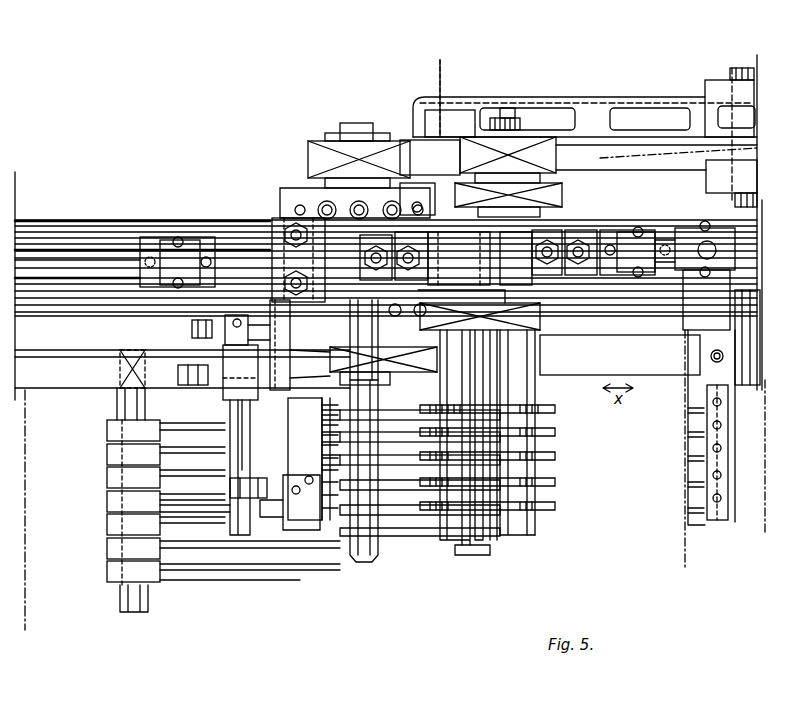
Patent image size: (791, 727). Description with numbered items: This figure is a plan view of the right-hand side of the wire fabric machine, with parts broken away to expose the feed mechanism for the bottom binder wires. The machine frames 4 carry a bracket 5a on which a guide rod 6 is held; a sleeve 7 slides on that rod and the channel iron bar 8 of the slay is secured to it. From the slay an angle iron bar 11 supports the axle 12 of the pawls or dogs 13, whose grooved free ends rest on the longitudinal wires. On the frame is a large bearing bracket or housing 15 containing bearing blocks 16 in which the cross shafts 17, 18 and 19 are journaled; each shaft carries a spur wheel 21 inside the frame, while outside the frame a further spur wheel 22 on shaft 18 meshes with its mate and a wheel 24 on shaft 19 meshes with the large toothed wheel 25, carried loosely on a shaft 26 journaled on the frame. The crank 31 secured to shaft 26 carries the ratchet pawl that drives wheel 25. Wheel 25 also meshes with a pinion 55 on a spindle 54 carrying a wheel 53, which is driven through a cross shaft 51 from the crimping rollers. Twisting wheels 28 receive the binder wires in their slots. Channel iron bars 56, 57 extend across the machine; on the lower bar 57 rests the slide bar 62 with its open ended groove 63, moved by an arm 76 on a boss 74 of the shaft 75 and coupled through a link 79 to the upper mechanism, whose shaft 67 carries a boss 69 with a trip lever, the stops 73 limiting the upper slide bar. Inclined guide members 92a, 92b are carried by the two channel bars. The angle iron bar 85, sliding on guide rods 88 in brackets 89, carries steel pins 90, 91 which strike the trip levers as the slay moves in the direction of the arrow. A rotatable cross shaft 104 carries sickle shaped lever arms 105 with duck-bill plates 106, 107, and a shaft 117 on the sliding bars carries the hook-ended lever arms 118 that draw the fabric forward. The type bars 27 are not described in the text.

The machine frame 4 is at (162, 220).
The bracket 5a is at (627, 252).
The guide rod 6 is at (668, 262).
The sleeve 7 is at (705, 249).
The channel iron bar 8 is at (700, 540).
The angle iron bar 11 is at (730, 470).
The axle 12 is at (722, 435).
The pawls or dogs 13 is at (688, 412).
The bearing bracket or housing 15 is at (478, 257).
The bearing block 16 is at (447, 215).
The shaft 17 is at (443, 520).
The shaft 18 is at (535, 388).
The shaft 19 is at (522, 124).
The spur wheel 21 is at (436, 320).
The spur wheel 22 is at (565, 190).
The wheel 24 is at (560, 158).
The large toothed wheel 25 is at (570, 100).
The shaft 26 is at (732, 66).
The type bars 27 is at (558, 450).
The twisting wheel 28 is at (498, 386).
The crank 31 is at (703, 85).
The cross shaft 51 is at (288, 358).
The wheel 53 is at (286, 345).
The spindle 54 is at (375, 98).
The pinion 55 is at (305, 158).
The channel iron bar 56 is at (351, 245).
The channel iron bar 57 is at (280, 452).
The slide bar 62 is at (309, 459).
The groove 63 is at (307, 458).
The shaft 67 is at (246, 414).
The boss 69 is at (230, 395).
The stop 73 is at (285, 522).
The boss 74 is at (232, 498).
The shaft 75 is at (245, 465).
The arm 76 is at (228, 488).
The link 79 is at (192, 328).
The angle iron bar 85 is at (357, 361).
The guide rod 88 is at (75, 262).
The bracket 89 is at (177, 262).
The steel pin 90 is at (155, 352).
The steel pin 91 is at (185, 400).
The inclined guide member 92a is at (355, 349).
The inclined guide member 92b is at (362, 560).
The rotatable cross shaft 104 is at (474, 540).
The sickle shaped lever arm 105 is at (415, 444).
The plate 106 is at (395, 412).
The plate 107 is at (372, 452).
The shaft 117 is at (116, 405).
The lever arm 118 is at (105, 474).